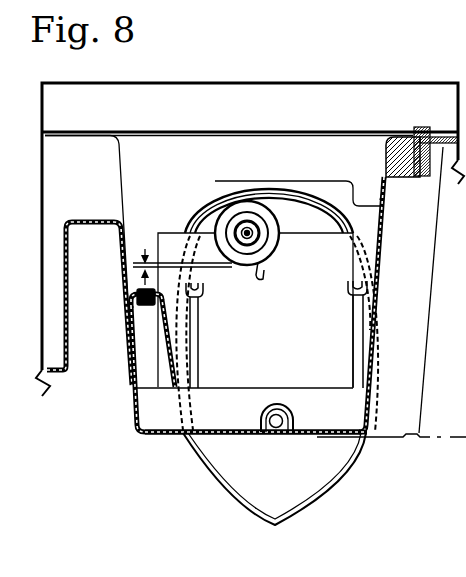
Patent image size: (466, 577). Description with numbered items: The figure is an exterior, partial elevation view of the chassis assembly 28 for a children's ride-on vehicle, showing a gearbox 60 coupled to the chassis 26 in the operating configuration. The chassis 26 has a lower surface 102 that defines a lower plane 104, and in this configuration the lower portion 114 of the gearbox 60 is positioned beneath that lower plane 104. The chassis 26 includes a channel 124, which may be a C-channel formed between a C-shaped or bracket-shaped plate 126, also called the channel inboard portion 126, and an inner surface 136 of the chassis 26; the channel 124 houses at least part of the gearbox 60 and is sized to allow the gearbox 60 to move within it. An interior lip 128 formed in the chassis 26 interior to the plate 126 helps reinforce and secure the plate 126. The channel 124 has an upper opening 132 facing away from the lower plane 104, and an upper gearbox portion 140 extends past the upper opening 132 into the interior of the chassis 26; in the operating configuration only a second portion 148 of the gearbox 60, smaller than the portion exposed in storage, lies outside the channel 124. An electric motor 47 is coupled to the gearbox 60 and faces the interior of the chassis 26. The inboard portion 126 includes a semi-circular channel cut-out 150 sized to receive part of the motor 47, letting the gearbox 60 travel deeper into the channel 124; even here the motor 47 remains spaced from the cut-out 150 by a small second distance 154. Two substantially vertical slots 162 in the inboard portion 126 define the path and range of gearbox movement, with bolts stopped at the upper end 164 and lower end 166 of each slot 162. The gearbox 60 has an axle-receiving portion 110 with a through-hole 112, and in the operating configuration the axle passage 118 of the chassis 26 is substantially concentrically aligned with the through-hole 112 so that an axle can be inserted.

The chassis assembly 28 is at (250, 52).
The chassis 26 is at (90, 116).
The inner surface 136 is at (171, 160).
The upper opening 132 is at (169, 206).
The channel 124 is at (163, 228).
The upper gearbox portion 140 is at (240, 182).
The gearbox 60 is at (211, 196).
The C-shaped plate 126 is at (331, 280).
The electric motor 47 is at (266, 205).
The channel cut-out 150 is at (265, 272).
The upper end 164 is at (197, 297).
The slots 162 is at (194, 323).
The second portion 148 is at (353, 208).
The second distance 154 is at (142, 281).
The lower end 166 is at (197, 389).
The interior lip 128 is at (150, 412).
The lower surface 102 is at (159, 437).
The axle passage 118 is at (284, 418).
The through-hole 112 is at (276, 428).
The axle-receiving portion 110 is at (280, 448).
The lower portion 114 is at (297, 491).
The lower plane 104 is at (437, 440).